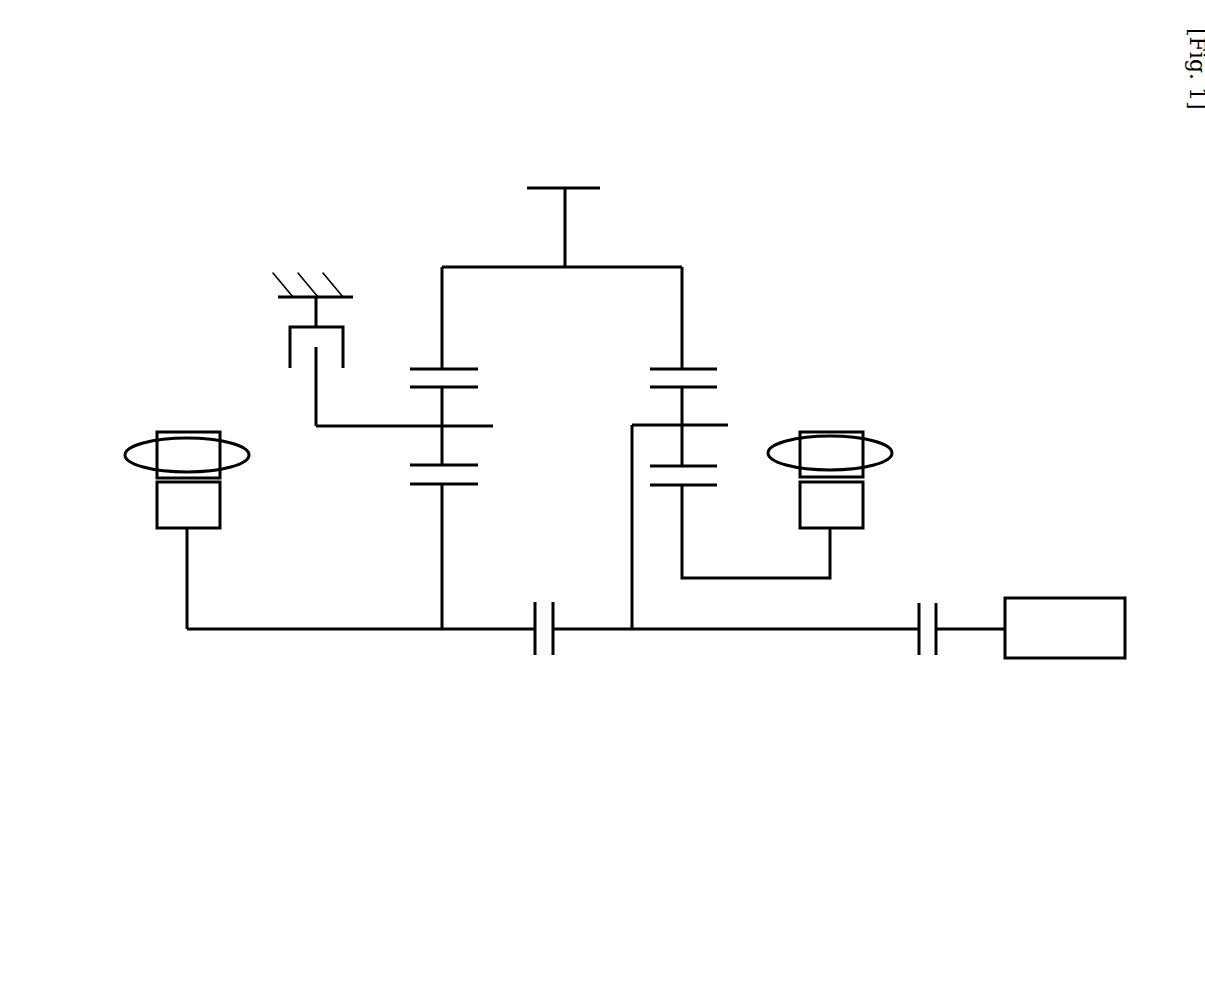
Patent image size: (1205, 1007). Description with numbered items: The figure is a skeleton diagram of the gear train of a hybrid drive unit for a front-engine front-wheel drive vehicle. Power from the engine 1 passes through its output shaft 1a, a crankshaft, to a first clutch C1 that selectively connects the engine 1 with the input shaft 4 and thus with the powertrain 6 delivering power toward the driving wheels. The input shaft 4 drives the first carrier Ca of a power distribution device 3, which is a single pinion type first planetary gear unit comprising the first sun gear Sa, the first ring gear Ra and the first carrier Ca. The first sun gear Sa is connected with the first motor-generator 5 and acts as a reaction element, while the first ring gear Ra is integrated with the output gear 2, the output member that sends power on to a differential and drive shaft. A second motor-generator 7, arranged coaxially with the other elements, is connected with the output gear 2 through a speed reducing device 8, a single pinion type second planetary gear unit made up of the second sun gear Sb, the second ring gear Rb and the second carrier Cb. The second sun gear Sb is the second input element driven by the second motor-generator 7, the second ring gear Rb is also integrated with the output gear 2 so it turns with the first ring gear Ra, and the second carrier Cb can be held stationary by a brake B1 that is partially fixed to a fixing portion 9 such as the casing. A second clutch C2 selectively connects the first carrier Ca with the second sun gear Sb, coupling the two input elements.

The engine 1 is at (1080, 598).
The output shaft 1a is at (970, 632).
The output gear 2 is at (600, 186).
The power distribution device 3 is at (727, 296).
The input shaft 4 is at (765, 632).
The first motor-generator 5 is at (879, 421).
The powertrain 6 is at (465, 680).
The second motor-generator 7 is at (173, 412).
The speed reducing device 8 is at (393, 251).
The fixing portion 9 is at (344, 297).
The brake B1 is at (275, 356).
The first clutch C1 is at (932, 590).
The second clutch C2 is at (550, 665).
The first carrier Ca is at (655, 425).
The first ring gear Ra is at (718, 374).
The first sun gear Sa is at (705, 478).
The second carrier Cb is at (347, 428).
The second ring gear Rb is at (410, 371).
The second sun gear Sb is at (410, 486).